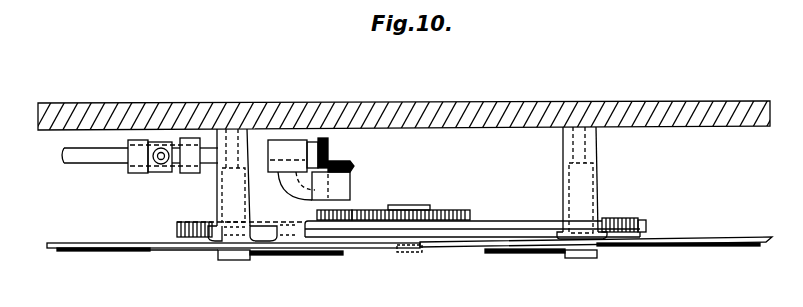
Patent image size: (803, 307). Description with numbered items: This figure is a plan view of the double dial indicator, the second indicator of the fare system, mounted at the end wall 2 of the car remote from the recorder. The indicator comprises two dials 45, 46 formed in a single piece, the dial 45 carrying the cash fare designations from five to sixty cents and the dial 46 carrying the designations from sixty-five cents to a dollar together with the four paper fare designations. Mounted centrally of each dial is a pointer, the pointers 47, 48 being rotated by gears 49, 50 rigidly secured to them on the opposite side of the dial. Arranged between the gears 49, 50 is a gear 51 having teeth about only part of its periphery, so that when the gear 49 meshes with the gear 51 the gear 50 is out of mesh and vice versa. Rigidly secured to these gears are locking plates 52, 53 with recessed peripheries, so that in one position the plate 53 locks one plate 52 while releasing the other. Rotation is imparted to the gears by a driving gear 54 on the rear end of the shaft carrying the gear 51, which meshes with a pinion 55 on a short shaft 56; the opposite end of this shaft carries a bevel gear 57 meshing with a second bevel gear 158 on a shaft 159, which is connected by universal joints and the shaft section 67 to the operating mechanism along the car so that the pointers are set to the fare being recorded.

The end wall 2 is at (548, 110).
The shaft section 67 is at (107, 157).
The shaft 159 is at (252, 153).
The second bevel gear 158 is at (323, 141).
The bevel gear 57 is at (340, 162).
The short shaft 56 is at (350, 176).
The pinion 55 is at (350, 212).
The driving gear 54 is at (440, 210).
The locking plate 53 is at (482, 224).
The gear 51 is at (510, 232).
The locking plate 52 is at (190, 222).
The gear 50 is at (640, 227).
The gear 49 is at (177, 233).
The dial 45 is at (152, 249).
The dial 46 is at (707, 243).
The pointer 47 is at (303, 257).
The pointer 48 is at (548, 258).